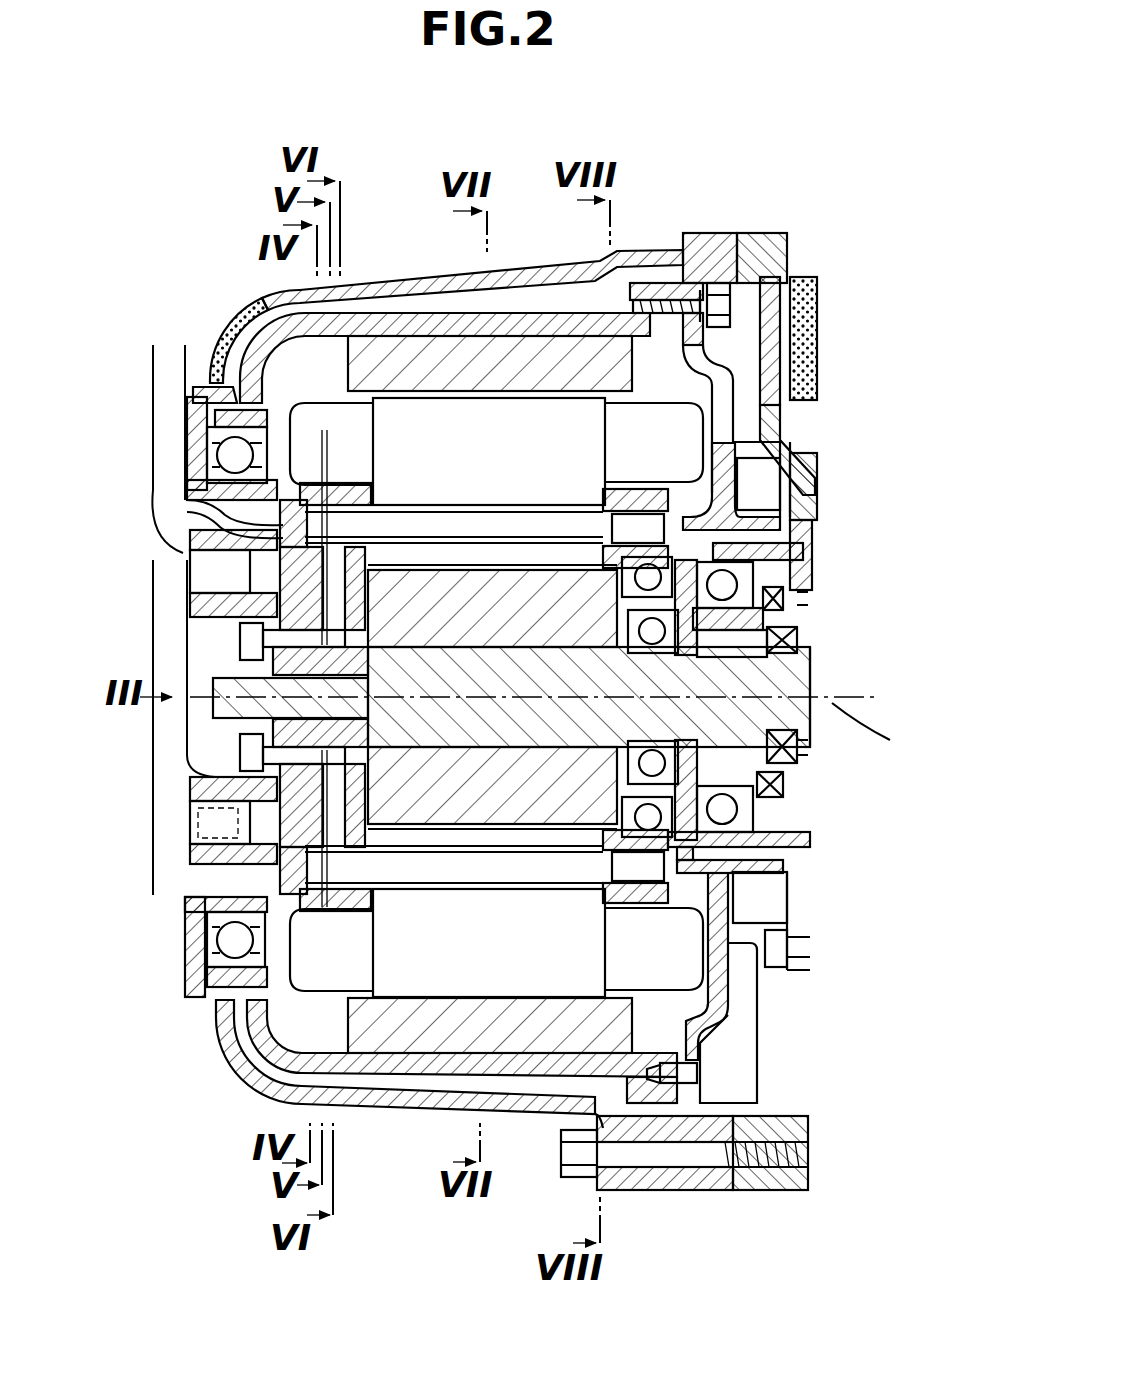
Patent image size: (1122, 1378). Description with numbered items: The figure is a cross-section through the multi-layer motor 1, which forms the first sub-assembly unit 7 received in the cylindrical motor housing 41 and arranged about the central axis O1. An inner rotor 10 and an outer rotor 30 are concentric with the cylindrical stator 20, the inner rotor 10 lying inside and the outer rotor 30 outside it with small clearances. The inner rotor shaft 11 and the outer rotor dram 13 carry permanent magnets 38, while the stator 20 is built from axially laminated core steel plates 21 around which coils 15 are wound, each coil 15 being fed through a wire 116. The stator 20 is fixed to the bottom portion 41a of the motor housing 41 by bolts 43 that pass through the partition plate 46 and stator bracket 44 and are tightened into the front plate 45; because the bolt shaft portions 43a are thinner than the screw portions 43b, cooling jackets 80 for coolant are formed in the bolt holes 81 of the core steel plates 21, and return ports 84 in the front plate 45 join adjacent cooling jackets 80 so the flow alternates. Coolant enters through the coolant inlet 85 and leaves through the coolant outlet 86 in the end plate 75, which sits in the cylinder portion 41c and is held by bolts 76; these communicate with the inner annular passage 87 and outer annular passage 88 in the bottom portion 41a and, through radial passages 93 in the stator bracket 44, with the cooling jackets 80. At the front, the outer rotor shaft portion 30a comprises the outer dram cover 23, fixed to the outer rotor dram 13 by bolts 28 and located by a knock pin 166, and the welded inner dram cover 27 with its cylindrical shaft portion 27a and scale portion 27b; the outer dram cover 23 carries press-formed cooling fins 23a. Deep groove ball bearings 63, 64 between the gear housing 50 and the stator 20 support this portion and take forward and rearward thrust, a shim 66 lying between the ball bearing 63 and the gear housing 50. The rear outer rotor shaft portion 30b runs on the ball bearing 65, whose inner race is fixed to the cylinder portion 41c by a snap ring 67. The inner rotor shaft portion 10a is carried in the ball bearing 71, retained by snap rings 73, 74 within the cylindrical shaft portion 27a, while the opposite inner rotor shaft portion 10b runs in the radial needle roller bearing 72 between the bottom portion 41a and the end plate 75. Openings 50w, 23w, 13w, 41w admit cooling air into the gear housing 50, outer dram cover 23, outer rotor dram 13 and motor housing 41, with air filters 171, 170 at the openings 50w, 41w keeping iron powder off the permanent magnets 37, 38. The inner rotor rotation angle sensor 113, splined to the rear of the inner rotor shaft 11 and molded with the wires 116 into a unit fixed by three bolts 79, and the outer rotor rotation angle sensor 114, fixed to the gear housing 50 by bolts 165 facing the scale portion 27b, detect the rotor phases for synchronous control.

The multi-layer motor 1 is at (433, 273).
The first sub-assembly unit 7 is at (265, 297).
The inner rotor 10 is at (443, 805).
The inner rotor shaft portion 10a is at (755, 748).
The inner rotor shaft portion 10b is at (225, 700).
The inner rotor shaft 11 is at (765, 678).
The outer rotor dram 13 is at (405, 312).
The opening 13w is at (210, 365).
The coils 15 is at (650, 420).
The stator 20 is at (514, 392).
The core steel plates 21 is at (573, 403).
The outer dram cover 23 is at (780, 448).
The cooling fins 23a is at (745, 1085).
The opening 23w is at (713, 360).
The inner dram cover 27 is at (757, 513).
The cylindrical shaft portion 27a is at (755, 620).
The scale portion 27b is at (770, 865).
The bolts 28 is at (730, 313).
The outer rotor 30 is at (365, 312).
The outer rotor shaft portion 30a is at (667, 290).
The outer rotor shaft portion 30b is at (205, 400).
The permanent magnets 37 is at (500, 880).
The permanent magnets 38 is at (705, 1028).
The motor housing 41 is at (547, 270).
The bottom portion 41a is at (250, 1010).
The cylinder portion 41c is at (205, 918).
The opening 41w is at (228, 318).
The bolts 43 is at (368, 1100).
The bolt shaft portions 43a is at (560, 1000).
The screw portions 43b is at (762, 962).
The stator bracket 44 is at (268, 1085).
The front plate 45 is at (717, 1013).
The partition plate 46 is at (260, 1060).
The gear housing 50 is at (767, 233).
The opening 50w is at (785, 293).
The ball bearing 63 is at (735, 598).
The ball bearing 64 is at (695, 553).
The ball bearing 65 is at (213, 957).
The shim 66 is at (700, 570).
The snap ring 67 is at (235, 985).
The deep groove ball bearing 71 is at (710, 793).
The radial needle roller bearing 72 is at (245, 745).
The snap ring 73 is at (775, 782).
The snap ring 74 is at (755, 822).
The end plate 75 is at (215, 865).
The bolts 76 is at (240, 650).
The bolts 79 is at (200, 843).
The cooling jackets 80 is at (528, 875).
The bolt holes 81 is at (483, 810).
The return ports 84 is at (670, 452).
The coolant inlet 85 is at (200, 822).
The coolant outlet 86 is at (200, 562).
The inner annular passage 87 is at (195, 795).
The outer annular passage 88 is at (200, 580).
The radial passages 93 is at (200, 608).
The inner rotor rotation angle sensor 113 is at (215, 672).
The outer rotor rotation angle sensor 114 is at (768, 897).
The wire 116 is at (180, 515).
The bolts 165 is at (807, 938).
The knock pin 166 is at (688, 1085).
The air filter 170 is at (250, 293).
The air filter 171 is at (797, 277).
The axis O1 is at (881, 729).